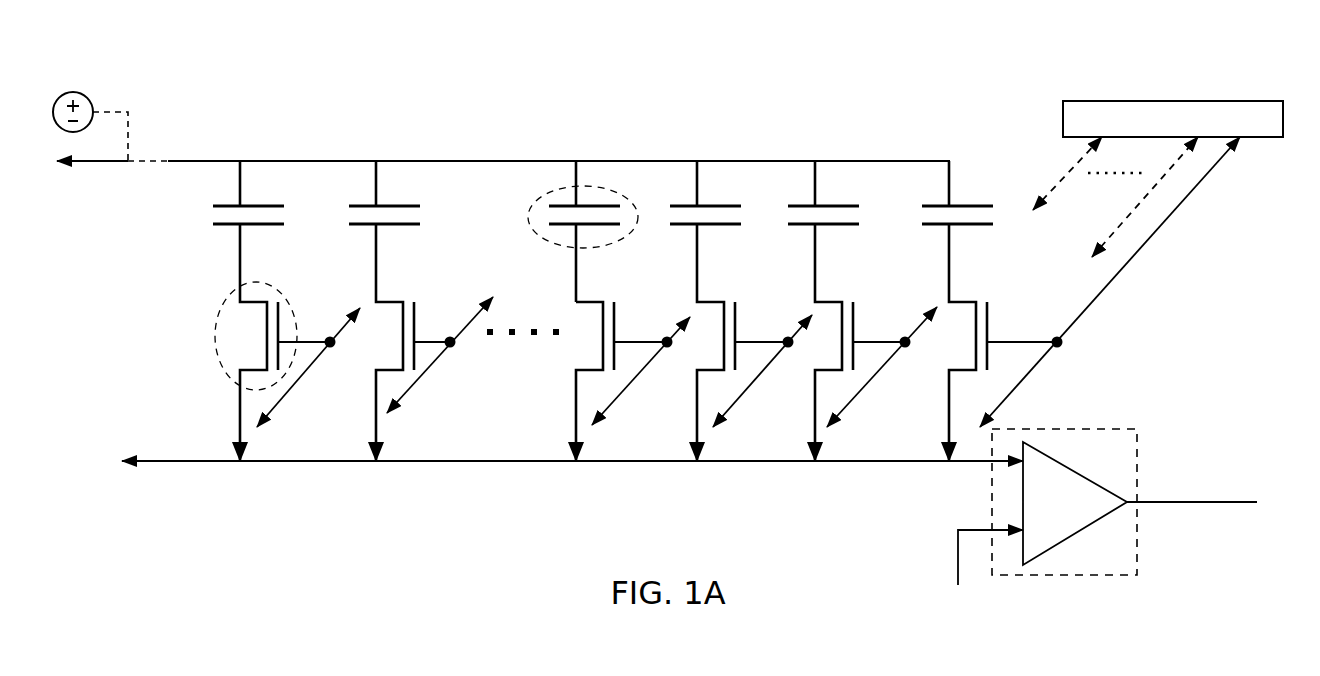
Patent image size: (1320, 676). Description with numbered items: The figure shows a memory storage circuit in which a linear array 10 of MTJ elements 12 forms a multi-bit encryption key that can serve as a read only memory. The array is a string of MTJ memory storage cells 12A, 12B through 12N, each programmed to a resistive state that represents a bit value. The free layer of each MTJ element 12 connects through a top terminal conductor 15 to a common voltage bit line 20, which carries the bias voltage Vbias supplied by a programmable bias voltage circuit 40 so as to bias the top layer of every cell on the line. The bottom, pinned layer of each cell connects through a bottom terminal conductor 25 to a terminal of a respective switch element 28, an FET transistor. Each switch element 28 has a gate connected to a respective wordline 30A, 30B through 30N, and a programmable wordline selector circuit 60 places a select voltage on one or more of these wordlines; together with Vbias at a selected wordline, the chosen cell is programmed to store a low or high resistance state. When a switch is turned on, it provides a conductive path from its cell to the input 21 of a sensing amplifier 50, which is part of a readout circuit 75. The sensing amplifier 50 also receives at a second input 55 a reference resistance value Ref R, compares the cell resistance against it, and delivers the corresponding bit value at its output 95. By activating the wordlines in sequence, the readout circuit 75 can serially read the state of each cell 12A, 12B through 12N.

The linear array 10 is at (585, 96).
The MTJ element 12 is at (537, 205).
The MTJ memory storage cell 12A is at (222, 225).
The MTJ memory storage cell 12B is at (358, 228).
The MTJ memory storage cell 12N is at (993, 193).
The top terminal conductor 15 is at (577, 173).
The voltage bit line 20 is at (283, 161).
The input of sensing amplifier 21 is at (470, 462).
The bottom terminal conductor 25 is at (577, 261).
The switch element 28 is at (218, 316).
The wordline 30A is at (285, 395).
The wordline 30B is at (413, 385).
The wordline 30N is at (1024, 378).
The programmable bias voltage circuit 40 is at (73, 92).
The sensing amplifier 50 is at (1047, 513).
The second input 55 is at (958, 560).
The programmable wordline selector circuit 60 is at (1157, 100).
The readout circuit 75 is at (1137, 429).
The output 95 is at (1215, 502).